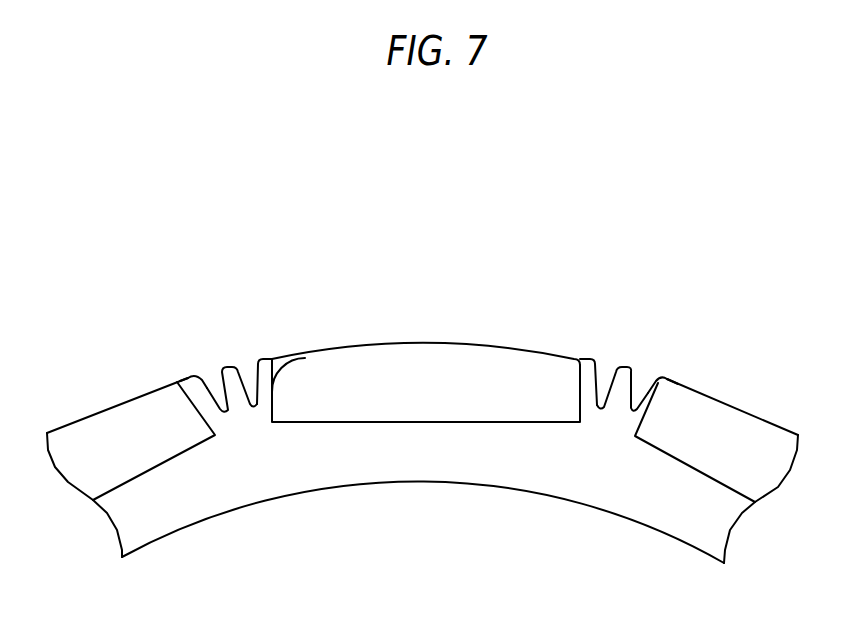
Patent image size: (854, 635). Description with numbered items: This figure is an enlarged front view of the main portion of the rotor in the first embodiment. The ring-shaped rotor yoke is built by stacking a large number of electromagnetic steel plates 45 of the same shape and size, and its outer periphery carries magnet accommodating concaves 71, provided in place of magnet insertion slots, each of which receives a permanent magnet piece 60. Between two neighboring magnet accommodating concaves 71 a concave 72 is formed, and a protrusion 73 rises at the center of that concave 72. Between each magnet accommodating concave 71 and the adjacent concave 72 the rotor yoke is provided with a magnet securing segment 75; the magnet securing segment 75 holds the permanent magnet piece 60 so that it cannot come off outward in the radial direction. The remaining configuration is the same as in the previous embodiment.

The electromagnetic steel plate 45 is at (424, 484).
The permanent magnet piece 60 is at (97, 423).
The magnet accommodating concave 71 is at (306, 356).
The concave 72 is at (210, 373).
The protrusion 73 is at (223, 366).
The magnet securing segment 75 is at (177, 382).